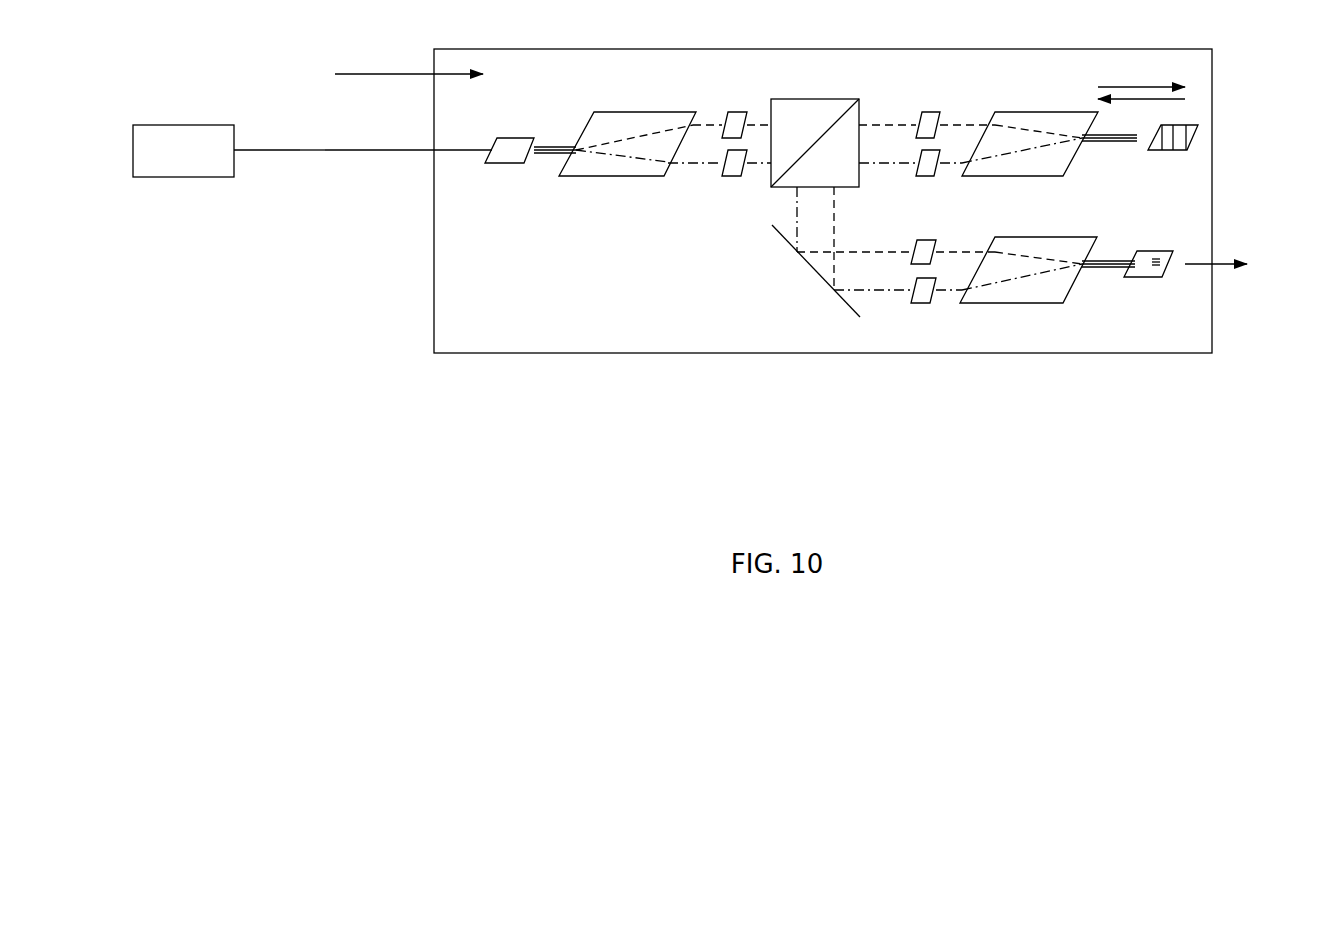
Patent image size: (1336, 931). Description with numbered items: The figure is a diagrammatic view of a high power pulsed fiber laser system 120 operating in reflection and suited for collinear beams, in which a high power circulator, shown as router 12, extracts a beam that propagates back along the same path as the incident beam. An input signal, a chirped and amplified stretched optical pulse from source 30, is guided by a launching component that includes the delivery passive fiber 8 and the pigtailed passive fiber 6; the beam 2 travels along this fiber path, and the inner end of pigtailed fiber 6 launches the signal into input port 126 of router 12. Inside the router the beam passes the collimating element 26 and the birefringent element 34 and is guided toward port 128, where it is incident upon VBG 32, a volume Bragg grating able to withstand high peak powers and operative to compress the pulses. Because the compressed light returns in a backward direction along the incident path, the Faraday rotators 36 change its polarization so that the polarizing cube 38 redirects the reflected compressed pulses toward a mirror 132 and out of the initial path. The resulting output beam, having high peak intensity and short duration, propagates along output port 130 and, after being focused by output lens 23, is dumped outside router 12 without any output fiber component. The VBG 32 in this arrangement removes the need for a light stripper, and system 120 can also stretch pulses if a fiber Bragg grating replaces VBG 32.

The source 30 is at (195, 125).
The delivery passive fiber 8 is at (260, 152).
The light beam 2 is at (355, 126).
The pigtailed passive fiber 6 is at (372, 152).
The input port 126 is at (420, 165).
The high power pulsed fiber laser system 120 is at (597, 370).
The router 12 is at (891, 274).
The collimator 26 is at (513, 138).
The birefringent crystal 34 is at (637, 137).
The polarizing cube 38 is at (821, 113).
The Faraday rotators 36 is at (924, 127).
The VBG 32 is at (1173, 150).
The port 128 is at (1212, 123).
The mirror 132 is at (837, 290).
The output lens 23 is at (1145, 266).
The output port 130 is at (1223, 250).